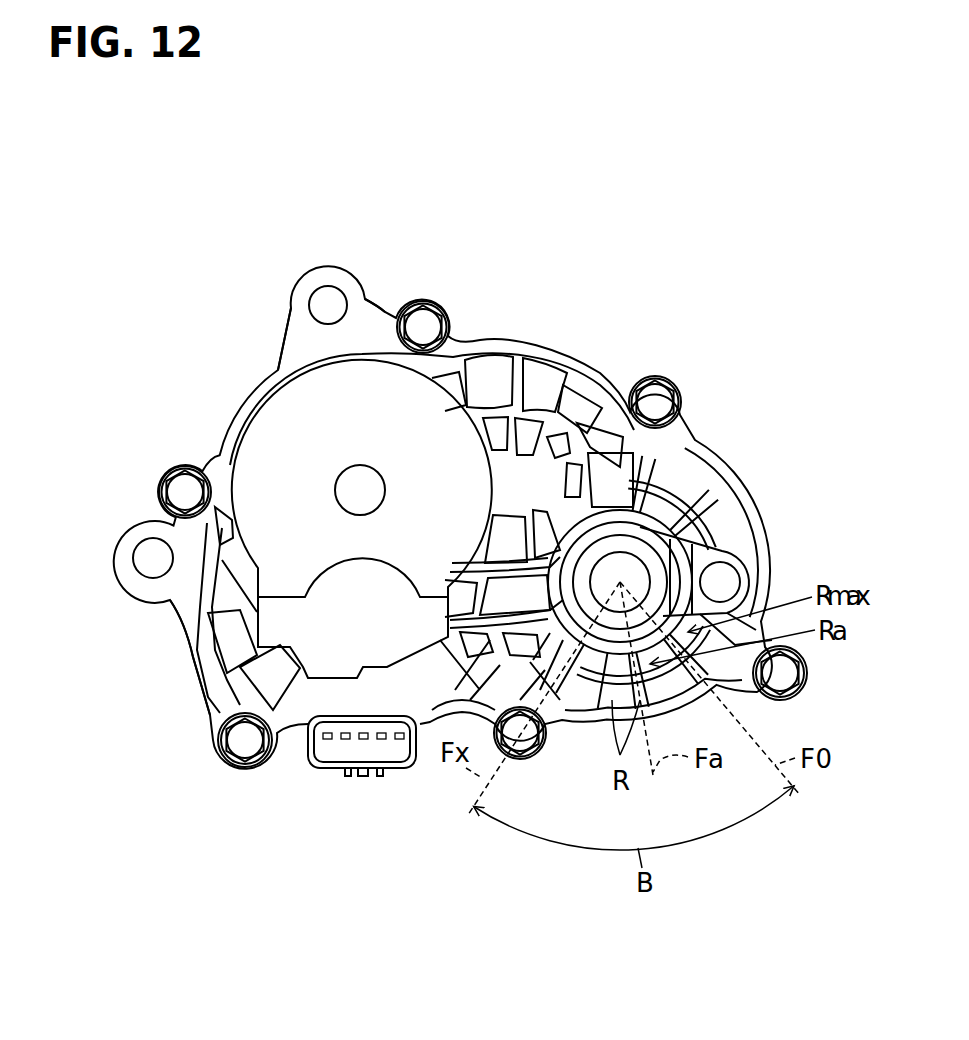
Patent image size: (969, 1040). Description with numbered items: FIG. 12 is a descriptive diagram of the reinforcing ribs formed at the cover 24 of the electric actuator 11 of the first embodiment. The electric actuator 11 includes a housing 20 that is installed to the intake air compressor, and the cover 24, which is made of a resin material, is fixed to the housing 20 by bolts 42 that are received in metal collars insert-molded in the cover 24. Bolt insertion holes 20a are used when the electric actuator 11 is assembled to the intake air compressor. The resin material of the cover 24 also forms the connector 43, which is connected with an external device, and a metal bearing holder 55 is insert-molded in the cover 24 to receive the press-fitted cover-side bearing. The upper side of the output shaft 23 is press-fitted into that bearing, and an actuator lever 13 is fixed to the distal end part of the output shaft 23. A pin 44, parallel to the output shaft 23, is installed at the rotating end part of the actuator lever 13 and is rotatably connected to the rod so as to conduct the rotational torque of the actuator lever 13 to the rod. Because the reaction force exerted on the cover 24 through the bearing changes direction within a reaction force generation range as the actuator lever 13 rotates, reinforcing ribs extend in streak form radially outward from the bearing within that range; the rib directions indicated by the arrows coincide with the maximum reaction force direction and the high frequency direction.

The electric actuator 11 is at (632, 348).
The actuator lever 13 is at (705, 556).
The housing 20 is at (165, 617).
The bolt insertion holes 20a is at (318, 303).
The output shaft 23 is at (632, 566).
The cover 24 is at (295, 407).
The bolts 42 is at (430, 327).
The connector 43 is at (408, 768).
The pin 44 is at (724, 580).
The bearing holder 55 is at (622, 528).